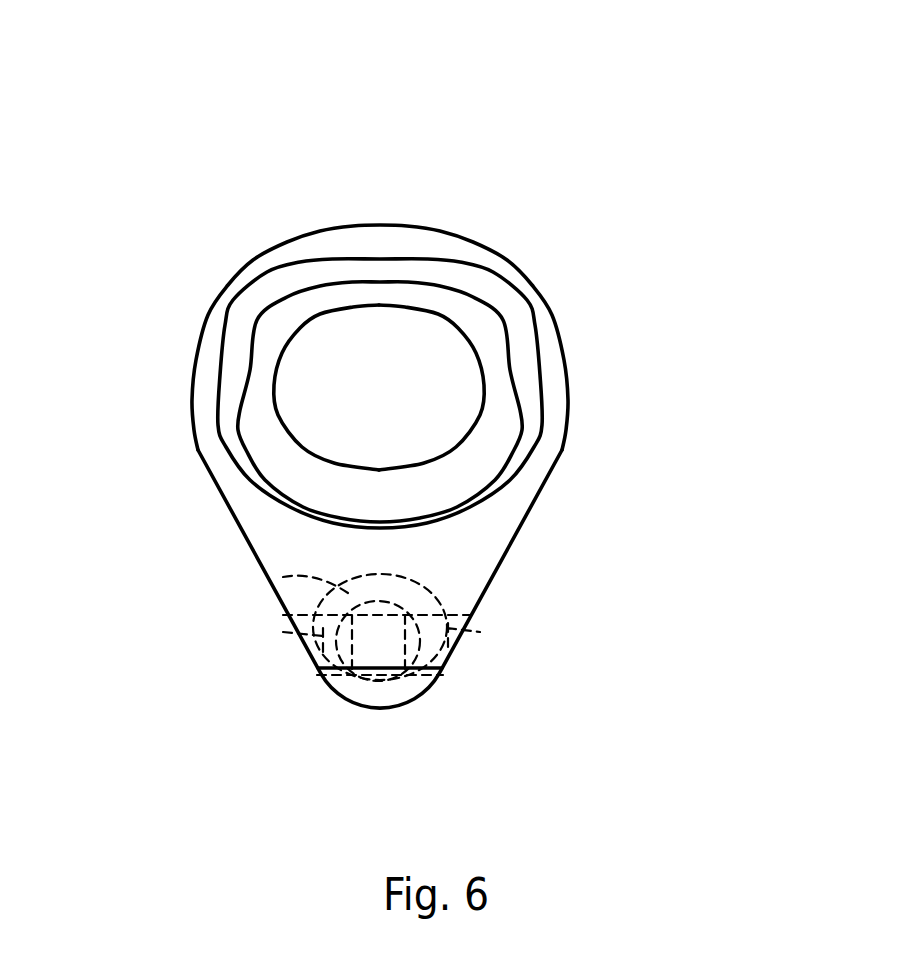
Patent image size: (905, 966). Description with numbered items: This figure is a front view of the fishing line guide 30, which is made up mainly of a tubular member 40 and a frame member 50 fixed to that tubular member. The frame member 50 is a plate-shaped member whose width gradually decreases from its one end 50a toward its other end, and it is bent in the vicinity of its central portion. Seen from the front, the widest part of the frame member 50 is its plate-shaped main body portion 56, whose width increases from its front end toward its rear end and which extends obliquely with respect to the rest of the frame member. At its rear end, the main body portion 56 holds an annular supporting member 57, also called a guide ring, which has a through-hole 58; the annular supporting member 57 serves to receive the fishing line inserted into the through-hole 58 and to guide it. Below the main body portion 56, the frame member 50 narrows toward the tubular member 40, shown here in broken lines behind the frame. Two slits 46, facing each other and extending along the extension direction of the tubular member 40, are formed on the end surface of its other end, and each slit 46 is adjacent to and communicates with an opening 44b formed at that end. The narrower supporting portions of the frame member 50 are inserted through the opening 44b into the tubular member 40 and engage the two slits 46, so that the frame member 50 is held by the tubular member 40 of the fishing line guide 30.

The fishing line guide 30 is at (662, 195).
The one end of the frame member 50a is at (360, 250).
The frame member 50 is at (435, 545).
The main body portion 56 is at (332, 547).
The annular supporting member 57 is at (495, 412).
The through-hole 58 is at (383, 372).
The tubular member 40 is at (283, 577).
The slits 46 is at (308, 632).
The opening 44b is at (373, 683).